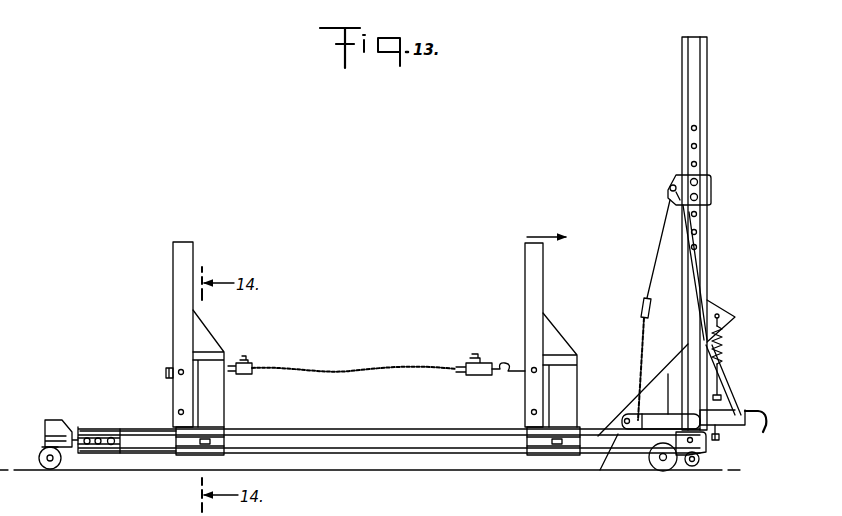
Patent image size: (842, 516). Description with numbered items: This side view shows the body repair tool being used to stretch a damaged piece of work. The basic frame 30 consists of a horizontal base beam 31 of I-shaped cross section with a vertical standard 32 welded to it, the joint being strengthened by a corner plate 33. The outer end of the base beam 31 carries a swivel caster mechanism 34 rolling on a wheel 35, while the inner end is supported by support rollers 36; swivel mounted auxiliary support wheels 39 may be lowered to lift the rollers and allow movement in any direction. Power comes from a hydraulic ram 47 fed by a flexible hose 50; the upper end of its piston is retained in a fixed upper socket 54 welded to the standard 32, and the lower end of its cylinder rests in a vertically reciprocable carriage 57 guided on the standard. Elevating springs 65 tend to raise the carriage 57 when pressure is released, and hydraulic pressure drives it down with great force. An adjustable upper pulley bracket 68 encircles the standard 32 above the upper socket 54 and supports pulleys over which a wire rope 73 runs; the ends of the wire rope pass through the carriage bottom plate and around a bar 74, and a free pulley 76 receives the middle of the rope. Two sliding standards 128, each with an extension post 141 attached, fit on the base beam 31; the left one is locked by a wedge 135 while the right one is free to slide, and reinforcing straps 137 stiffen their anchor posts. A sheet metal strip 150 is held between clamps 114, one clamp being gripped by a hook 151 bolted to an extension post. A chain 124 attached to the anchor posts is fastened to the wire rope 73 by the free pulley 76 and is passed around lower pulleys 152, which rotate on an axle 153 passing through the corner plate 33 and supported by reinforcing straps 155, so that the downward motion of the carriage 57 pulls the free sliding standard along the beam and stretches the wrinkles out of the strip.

The basic frame 30 is at (369, 428).
The base beam 31 is at (427, 428).
The vertical standard 32 is at (708, 108).
The corner plate 33 is at (669, 374).
The swivel caster mechanism 34 is at (52, 420).
The wheel 35 is at (38, 452).
The support roller 36 is at (659, 470).
The auxiliary support wheel 39 is at (698, 470).
The hydraulic ram 47 is at (724, 353).
The flexible hose 50 is at (758, 412).
The upper socket 54 is at (728, 312).
The carriage 57 is at (738, 396).
The elevating spring 65 is at (722, 378).
The upper pulley bracket 68 is at (713, 192).
The wire rope 73 is at (693, 276).
The bar 74 is at (719, 442).
The free pulley 76 is at (642, 304).
The clamp 114 is at (252, 364).
The chain 124 is at (640, 332).
The sliding standard 128 is at (226, 404).
The wedge 135 is at (245, 428).
The reinforcing strap 137 is at (176, 438).
The extension post 141 is at (172, 282).
The sheet metal strip 150 is at (390, 372).
The hook 151 is at (504, 376).
The lower pulley 152 is at (630, 404).
The axle 153 is at (624, 438).
The reinforcing strap 155 is at (652, 414).